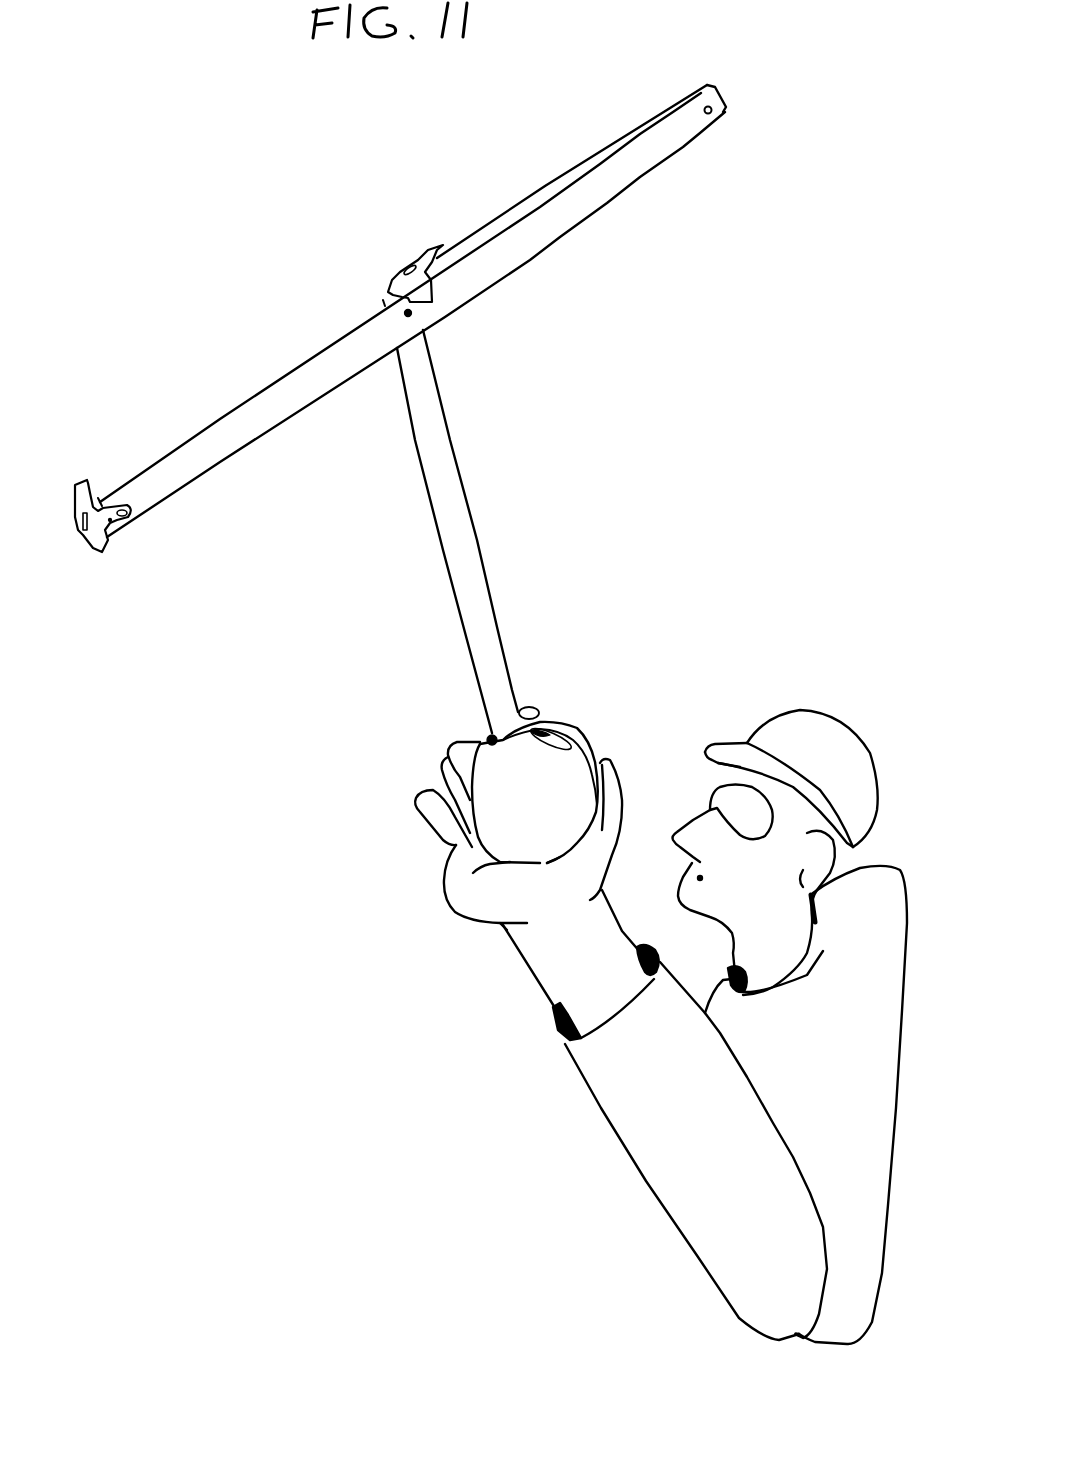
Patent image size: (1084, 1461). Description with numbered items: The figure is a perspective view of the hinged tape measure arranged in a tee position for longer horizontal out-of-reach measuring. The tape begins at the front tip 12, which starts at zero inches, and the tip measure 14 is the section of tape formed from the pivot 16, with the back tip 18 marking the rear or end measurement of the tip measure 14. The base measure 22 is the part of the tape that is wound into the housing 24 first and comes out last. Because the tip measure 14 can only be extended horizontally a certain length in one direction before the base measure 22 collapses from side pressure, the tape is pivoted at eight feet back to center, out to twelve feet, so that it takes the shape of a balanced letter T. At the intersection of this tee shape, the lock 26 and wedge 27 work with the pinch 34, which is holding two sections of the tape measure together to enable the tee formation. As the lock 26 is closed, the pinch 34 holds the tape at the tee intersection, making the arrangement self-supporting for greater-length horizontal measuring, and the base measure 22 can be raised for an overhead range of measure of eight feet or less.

The front tip 12 is at (116, 643).
The tip measure 14 is at (182, 430).
The pivot 16 is at (448, 326).
The back tip 18 is at (733, 115).
The base measure 22 is at (632, 686).
The housing 24 is at (670, 759).
The lock 26 is at (331, 189).
The wedge 27 is at (238, 224).
The pinch 34 is at (395, 267).